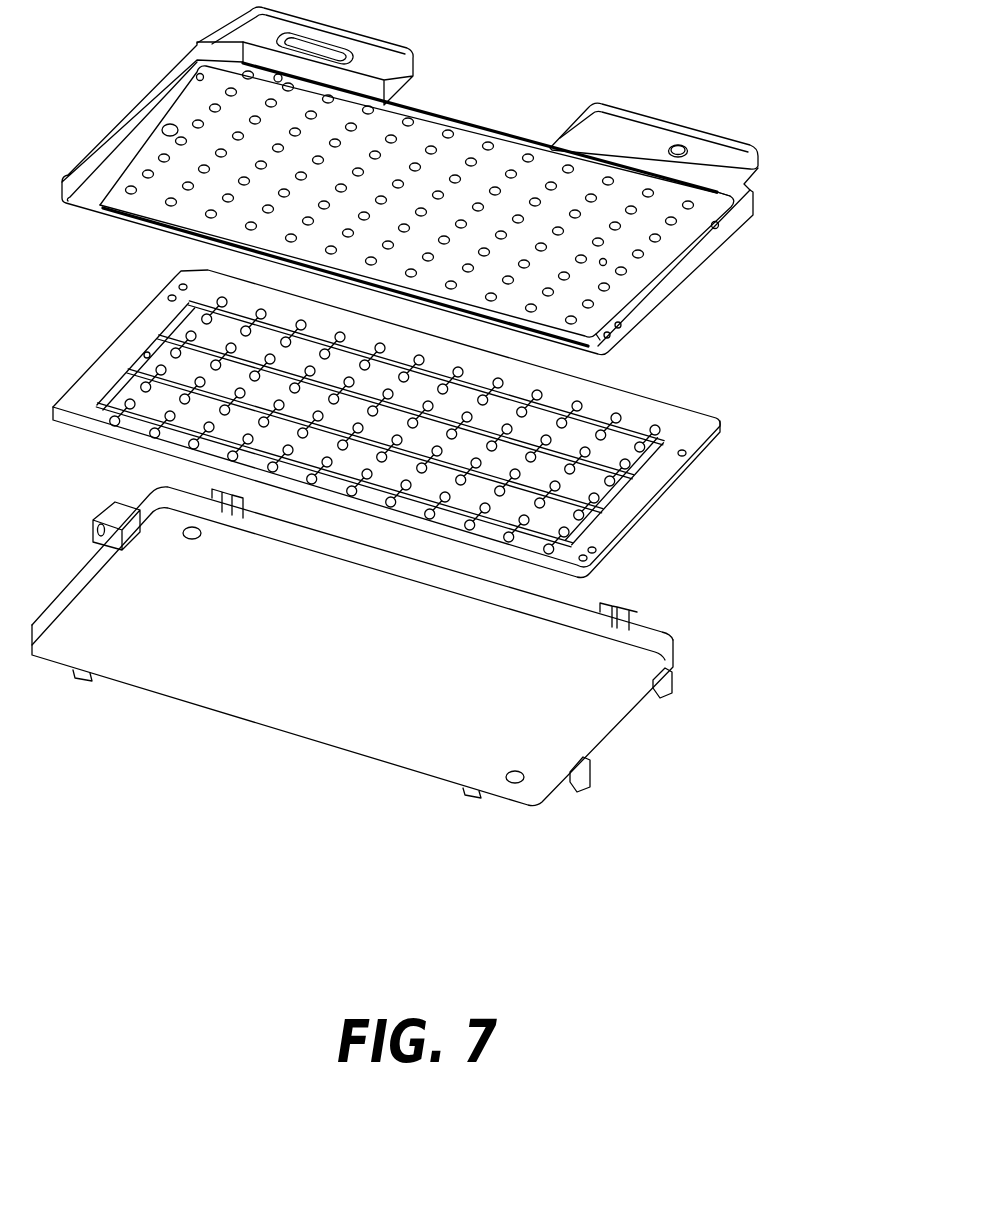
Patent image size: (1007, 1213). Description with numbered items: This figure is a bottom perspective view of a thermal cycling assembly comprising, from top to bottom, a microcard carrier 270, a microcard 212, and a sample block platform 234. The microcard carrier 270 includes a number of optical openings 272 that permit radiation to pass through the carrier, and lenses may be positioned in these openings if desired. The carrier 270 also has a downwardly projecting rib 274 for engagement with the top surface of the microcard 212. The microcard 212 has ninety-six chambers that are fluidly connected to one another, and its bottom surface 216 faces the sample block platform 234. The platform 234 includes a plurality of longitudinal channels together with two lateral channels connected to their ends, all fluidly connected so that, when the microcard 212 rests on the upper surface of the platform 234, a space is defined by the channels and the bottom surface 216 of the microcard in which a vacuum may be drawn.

The microcard carrier 270 is at (465, 181).
The optical openings 272 is at (531, 154).
The downwardly projecting rib 274 is at (677, 253).
The microcard 212 is at (455, 424).
The bottom surface 216 is at (641, 499).
The sample block platform 234 is at (705, 648).